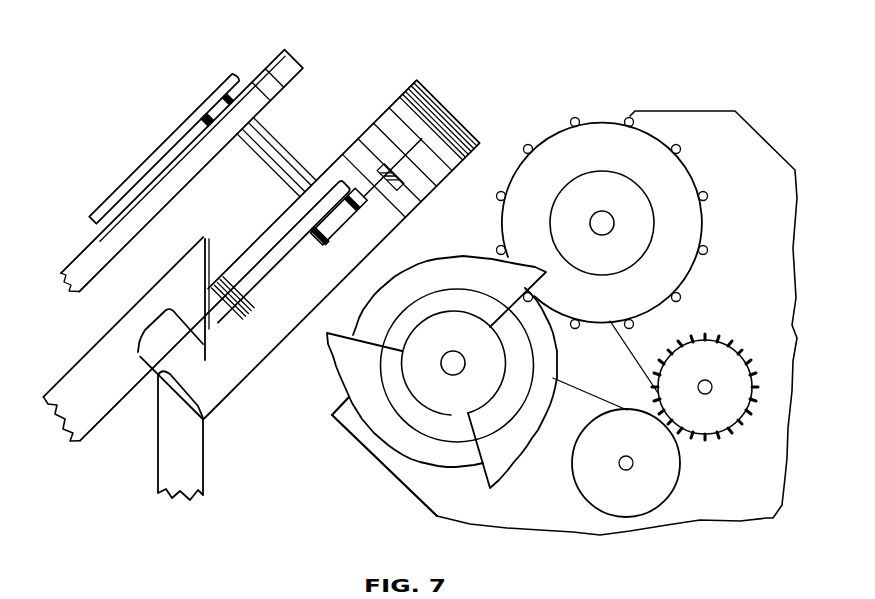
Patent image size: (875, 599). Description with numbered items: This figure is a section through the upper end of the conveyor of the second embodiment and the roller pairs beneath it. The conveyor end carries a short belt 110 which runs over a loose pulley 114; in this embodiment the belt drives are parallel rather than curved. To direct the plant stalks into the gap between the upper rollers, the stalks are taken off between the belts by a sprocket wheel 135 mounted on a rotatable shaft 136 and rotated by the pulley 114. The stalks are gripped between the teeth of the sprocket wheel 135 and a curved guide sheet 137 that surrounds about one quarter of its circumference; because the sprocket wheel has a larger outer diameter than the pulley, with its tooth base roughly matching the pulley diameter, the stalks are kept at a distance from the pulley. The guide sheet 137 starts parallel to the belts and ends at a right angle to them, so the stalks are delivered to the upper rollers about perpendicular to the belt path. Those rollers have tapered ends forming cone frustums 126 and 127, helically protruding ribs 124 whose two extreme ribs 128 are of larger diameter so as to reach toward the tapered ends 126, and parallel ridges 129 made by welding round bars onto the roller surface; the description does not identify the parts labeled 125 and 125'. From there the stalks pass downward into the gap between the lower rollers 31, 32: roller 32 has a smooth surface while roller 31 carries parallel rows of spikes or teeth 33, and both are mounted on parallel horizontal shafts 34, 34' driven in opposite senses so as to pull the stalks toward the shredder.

The short belt 110 is at (80, 252).
The loose pulley 114 is at (260, 56).
The helically protruding ribs 124 is at (432, 286).
The shaft of toothed wheel 125 is at (674, 222).
The cam shaft 125' is at (410, 431).
The cone frustum 126 is at (637, 142).
The cone frustum 127 is at (409, 367).
The extreme ribs 128 is at (329, 342).
The parallel ridges 129 is at (616, 106).
The lower roller 31 is at (722, 388).
The lower roller 32 is at (599, 485).
The spikes or teeth 33 is at (747, 363).
The shaft 34 is at (771, 417).
The shaft 34' is at (650, 516).
The sprocket wheel 135 is at (247, 315).
The rotatable shaft 136 is at (283, 166).
The curved guide sheet 137 is at (427, 102).